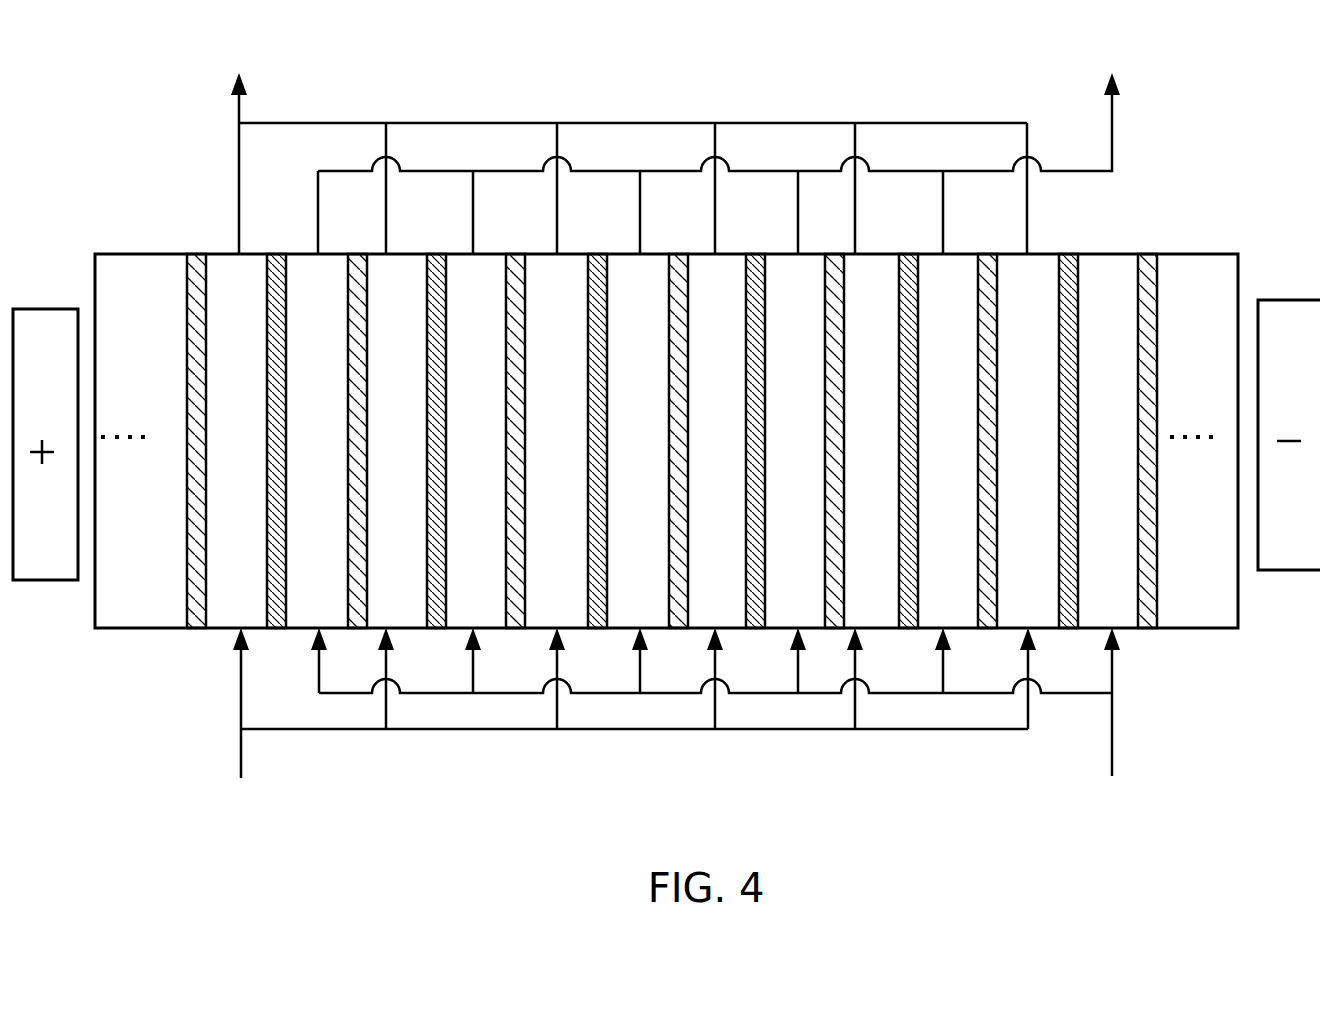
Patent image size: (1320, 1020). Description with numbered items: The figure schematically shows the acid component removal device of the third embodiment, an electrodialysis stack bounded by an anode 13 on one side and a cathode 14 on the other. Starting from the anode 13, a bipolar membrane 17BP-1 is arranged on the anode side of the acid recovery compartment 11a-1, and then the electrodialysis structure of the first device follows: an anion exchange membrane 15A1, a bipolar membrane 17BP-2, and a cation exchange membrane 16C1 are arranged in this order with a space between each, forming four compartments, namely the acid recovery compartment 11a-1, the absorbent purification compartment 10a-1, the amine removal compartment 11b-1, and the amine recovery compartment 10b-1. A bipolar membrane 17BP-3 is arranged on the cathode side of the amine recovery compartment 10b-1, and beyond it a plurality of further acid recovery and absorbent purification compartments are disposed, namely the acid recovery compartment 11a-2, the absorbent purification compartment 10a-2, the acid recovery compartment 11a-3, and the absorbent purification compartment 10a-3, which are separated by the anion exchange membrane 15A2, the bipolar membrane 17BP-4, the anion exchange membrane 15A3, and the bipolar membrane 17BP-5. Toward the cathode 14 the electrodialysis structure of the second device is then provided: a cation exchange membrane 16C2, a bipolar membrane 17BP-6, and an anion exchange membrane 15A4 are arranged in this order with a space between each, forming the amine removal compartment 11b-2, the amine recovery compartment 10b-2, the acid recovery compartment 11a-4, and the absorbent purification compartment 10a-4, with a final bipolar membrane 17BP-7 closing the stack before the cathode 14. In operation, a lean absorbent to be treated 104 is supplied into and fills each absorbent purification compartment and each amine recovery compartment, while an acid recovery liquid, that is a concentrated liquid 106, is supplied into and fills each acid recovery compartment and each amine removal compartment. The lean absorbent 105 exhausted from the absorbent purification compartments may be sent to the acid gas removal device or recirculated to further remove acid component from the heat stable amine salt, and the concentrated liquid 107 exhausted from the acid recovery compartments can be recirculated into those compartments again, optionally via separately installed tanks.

The anode 13 is at (45, 583).
The cathode 14 is at (1293, 573).
The bipolar membrane 17BP-1 is at (197, 252).
The bipolar membrane 17BP-2 is at (356, 252).
The bipolar membrane 17BP-3 is at (514, 252).
The bipolar membrane 17BP-4 is at (677, 252).
The bipolar membrane 17BP-5 is at (833, 252).
The bipolar membrane 17BP-6 is at (985, 252).
The bipolar membrane 17BP-7 is at (1148, 252).
The anion exchange membrane 15A1 is at (277, 252).
The anion exchange membrane 15A2 is at (598, 252).
The anion exchange membrane 15A3 is at (755, 252).
The anion exchange membrane 15A4 is at (1069, 252).
The cation exchange membrane 16C1 is at (437, 252).
The cation exchange membrane 16C2 is at (909, 252).
The acid recovery compartment 11a-1 is at (230, 315).
The absorbent purification compartment 10a-1 is at (313, 315).
The amine removal compartment 11b-1 is at (394, 315).
The amine recovery compartment 10b-1 is at (473, 315).
The acid recovery compartment 11a-2 is at (551, 315).
The absorbent purification compartment 10a-2 is at (634, 315).
The acid recovery compartment 11a-3 is at (709, 315).
The absorbent purification compartment 10a-3 is at (790, 315).
The amine removal compartment 11b-2 is at (868, 315).
The amine recovery compartment 10b-2 is at (938, 315).
The acid recovery compartment 11a-4 is at (1020, 315).
The absorbent purification compartment 10a-4 is at (1102, 315).
The concentrated liquid 107 is at (621, 149).
The lean absorbent 105 is at (726, 149).
The acid recovery liquid 106 is at (626, 720).
The lean absorbent to be treated 104 is at (723, 719).